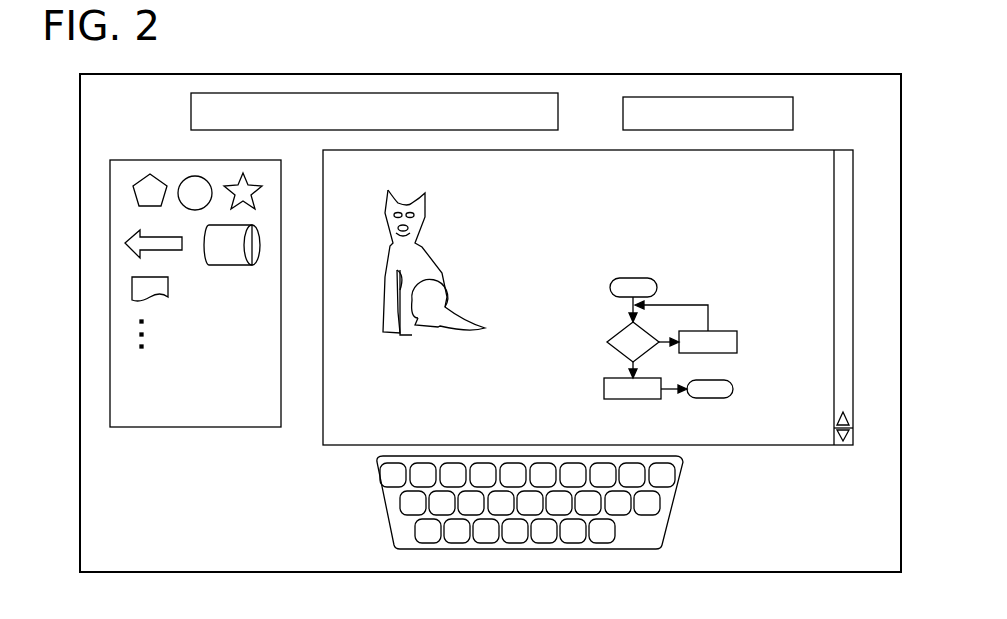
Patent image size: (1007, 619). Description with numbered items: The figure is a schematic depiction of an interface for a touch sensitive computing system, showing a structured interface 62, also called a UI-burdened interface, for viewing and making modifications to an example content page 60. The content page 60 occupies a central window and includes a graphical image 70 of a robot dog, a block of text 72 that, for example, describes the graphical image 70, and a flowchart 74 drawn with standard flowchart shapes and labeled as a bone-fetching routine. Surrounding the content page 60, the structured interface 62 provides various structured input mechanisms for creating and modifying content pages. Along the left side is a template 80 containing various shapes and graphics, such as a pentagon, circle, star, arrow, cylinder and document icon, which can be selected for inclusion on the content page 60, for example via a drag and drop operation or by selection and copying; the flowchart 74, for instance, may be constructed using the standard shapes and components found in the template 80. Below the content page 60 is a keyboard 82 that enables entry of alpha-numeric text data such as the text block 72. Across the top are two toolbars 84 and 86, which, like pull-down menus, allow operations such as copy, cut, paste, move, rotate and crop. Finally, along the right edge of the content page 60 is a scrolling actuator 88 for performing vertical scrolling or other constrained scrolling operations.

The content page 60 is at (602, 314).
The structured interface 62 is at (784, 572).
The graphical image 70 is at (387, 282).
The block of text 72 is at (605, 235).
The flowchart 74 is at (733, 310).
The template 80 is at (132, 427).
The keyboard 82 is at (665, 533).
The toolbar 84 is at (558, 103).
The toolbar 86 is at (793, 103).
The scrolling actuator 88 is at (842, 400).